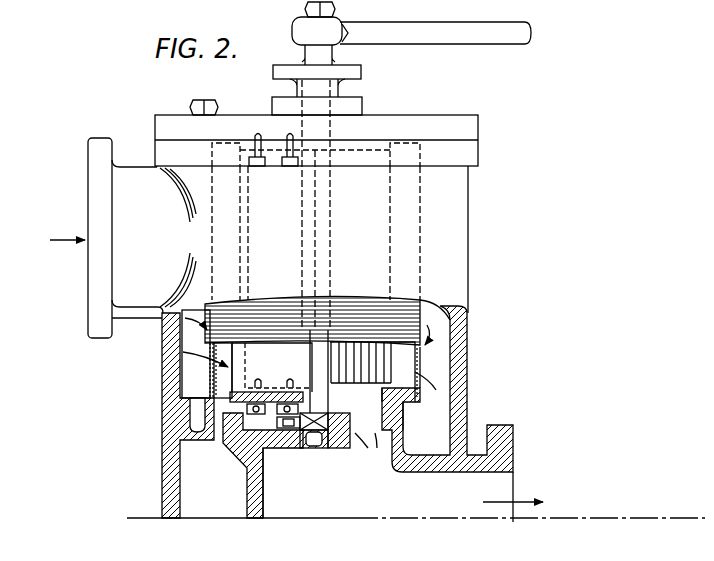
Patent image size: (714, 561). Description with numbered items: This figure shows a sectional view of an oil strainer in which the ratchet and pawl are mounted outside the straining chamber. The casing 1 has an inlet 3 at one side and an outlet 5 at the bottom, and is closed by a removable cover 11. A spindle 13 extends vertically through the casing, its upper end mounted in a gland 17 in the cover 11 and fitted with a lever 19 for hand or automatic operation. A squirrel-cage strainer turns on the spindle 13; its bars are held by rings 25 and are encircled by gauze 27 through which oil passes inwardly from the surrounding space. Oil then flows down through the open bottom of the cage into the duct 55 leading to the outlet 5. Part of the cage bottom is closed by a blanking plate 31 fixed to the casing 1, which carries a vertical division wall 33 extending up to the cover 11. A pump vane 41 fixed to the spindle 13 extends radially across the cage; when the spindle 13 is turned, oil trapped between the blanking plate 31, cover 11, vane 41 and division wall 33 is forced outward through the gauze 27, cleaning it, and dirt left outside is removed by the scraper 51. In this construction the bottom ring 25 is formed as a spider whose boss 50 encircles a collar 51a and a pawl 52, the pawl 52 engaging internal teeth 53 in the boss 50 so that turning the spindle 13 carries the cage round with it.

The casing 1 is at (168, 450).
The inlet 3 is at (103, 277).
The outlet 5 is at (499, 488).
The removable cover 11 is at (433, 132).
The spindle 13 is at (310, 225).
The gland 17 is at (360, 90).
The lever 19 is at (475, 38).
The ring 25 is at (372, 410).
The gauze 27 is at (400, 373).
The blanking plate 31 is at (252, 465).
The vertical division wall 33 is at (271, 379).
The pump vane 41 is at (325, 347).
The boss 50 is at (373, 427).
The scraper 51 is at (205, 371).
The collar 51a is at (287, 462).
The pawl 52 is at (287, 440).
The internal teeth 53 is at (343, 443).
The duct 55 is at (457, 502).